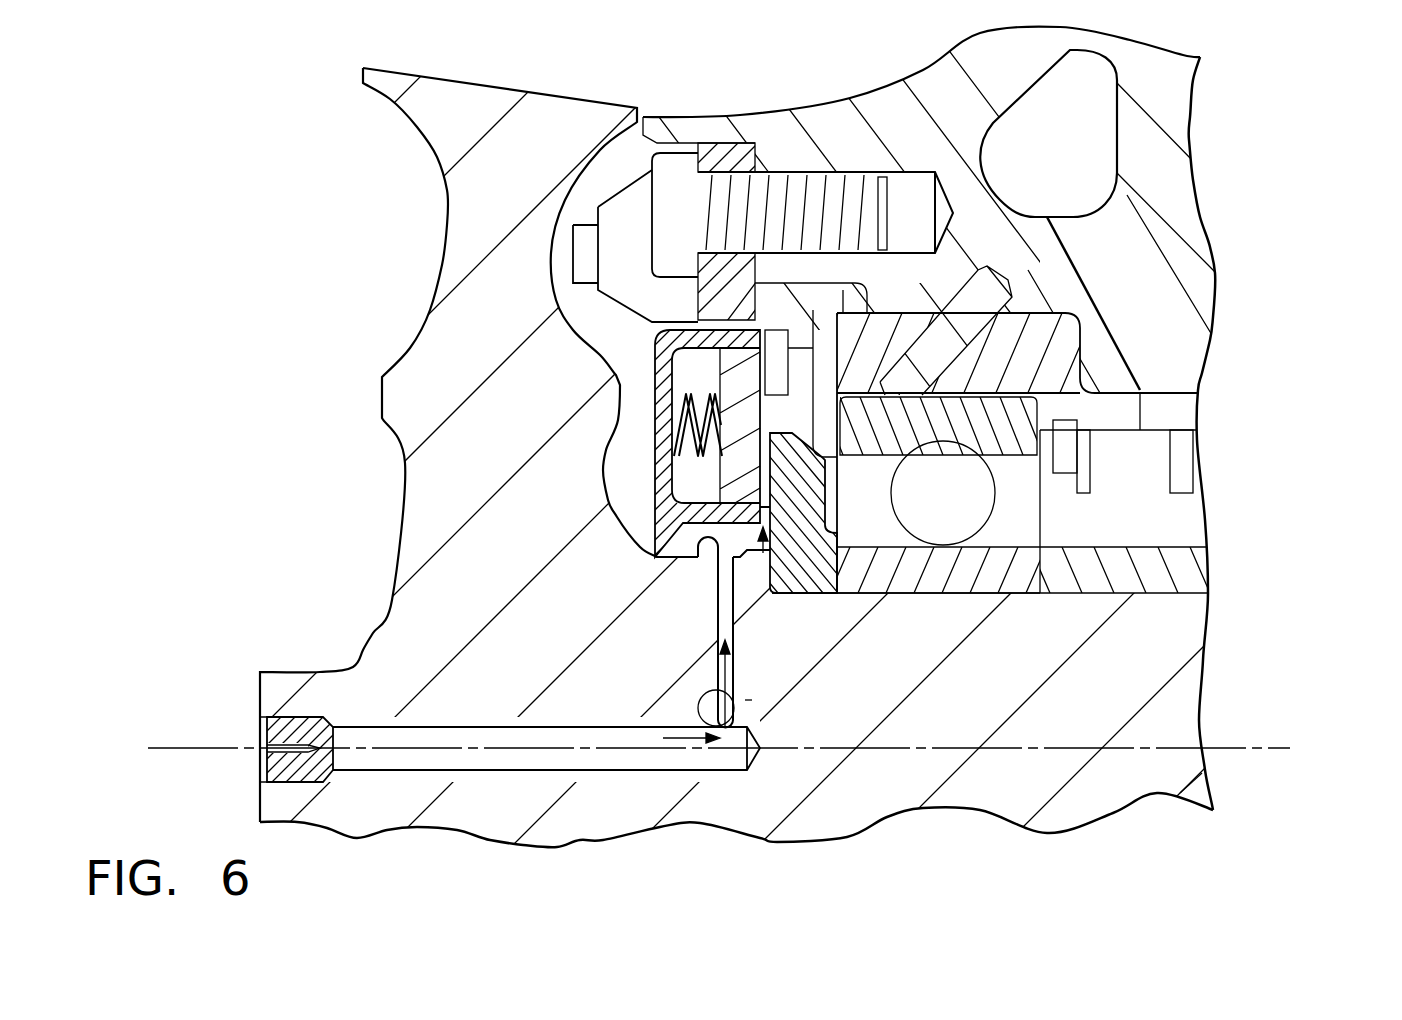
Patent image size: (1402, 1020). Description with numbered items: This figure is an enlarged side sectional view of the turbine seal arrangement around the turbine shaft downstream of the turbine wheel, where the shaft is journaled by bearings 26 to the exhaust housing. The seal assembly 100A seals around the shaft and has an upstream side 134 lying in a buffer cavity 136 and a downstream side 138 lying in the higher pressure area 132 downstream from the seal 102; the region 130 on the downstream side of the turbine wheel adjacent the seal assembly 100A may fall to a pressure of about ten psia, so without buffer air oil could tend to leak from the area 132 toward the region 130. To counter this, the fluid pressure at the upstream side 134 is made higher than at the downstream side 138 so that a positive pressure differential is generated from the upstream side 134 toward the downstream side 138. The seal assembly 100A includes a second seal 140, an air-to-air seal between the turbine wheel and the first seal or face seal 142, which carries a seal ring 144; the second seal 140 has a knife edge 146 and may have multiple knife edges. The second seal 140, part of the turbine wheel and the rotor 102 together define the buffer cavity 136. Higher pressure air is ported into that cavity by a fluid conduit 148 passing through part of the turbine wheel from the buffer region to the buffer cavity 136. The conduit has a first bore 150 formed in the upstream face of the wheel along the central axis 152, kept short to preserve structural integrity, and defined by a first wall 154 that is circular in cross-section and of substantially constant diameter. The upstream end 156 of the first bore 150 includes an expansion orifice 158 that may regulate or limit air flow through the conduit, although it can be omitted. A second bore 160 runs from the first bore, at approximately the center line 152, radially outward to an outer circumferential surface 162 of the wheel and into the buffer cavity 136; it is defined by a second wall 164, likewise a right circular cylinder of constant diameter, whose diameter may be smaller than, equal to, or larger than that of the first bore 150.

The bearings 26 is at (995, 515).
The seal assembly 100A is at (653, 427).
The seal 102 is at (828, 556).
The region 130 is at (607, 323).
The higher pressure area 132 is at (810, 295).
The upstream side 134 is at (792, 600).
The downstream side 138 is at (777, 416).
The buffer cavity 136 is at (690, 558).
The second seal 140 is at (640, 515).
The first seal 142 is at (784, 471).
The seal ring 144 is at (742, 562).
The knife edge 146 is at (652, 556).
The fluid conduit 148 is at (645, 815).
The first bore 150 is at (508, 790).
The central axis 152 is at (1233, 746).
The first wall 154 is at (460, 722).
The upstream end 156 is at (290, 795).
The expansion orifice 158 is at (294, 727).
The second bore 160 is at (752, 700).
The outer circumferential surface 162 is at (716, 600).
The second wall 164 is at (733, 710).